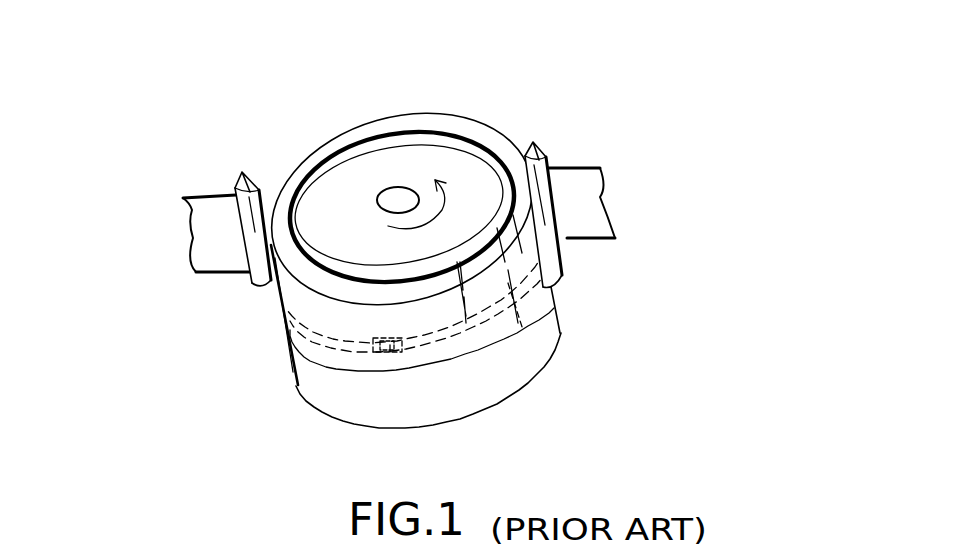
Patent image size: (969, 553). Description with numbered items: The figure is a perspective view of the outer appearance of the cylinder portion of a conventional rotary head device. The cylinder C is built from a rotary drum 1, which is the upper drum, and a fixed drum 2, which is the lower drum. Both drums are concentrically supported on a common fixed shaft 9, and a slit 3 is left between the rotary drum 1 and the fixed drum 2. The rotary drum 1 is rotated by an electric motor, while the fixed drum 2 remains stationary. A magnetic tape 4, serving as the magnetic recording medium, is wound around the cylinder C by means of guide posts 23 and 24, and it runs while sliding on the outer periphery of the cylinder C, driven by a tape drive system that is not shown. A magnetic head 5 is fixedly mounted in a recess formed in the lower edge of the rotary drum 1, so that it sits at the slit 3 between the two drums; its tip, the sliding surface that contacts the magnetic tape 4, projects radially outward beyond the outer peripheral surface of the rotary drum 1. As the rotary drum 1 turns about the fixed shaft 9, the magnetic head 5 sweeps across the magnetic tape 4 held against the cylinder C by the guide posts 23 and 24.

The rotary drum 1 is at (197, 88).
The fixed drum 2 is at (323, 393).
The slit 3 is at (533, 372).
The magnetic tape 4 is at (197, 228).
The magnetic head 5 is at (390, 352).
The fixed shaft 9 is at (397, 187).
The guide post 23 is at (255, 168).
The guide post 24 is at (540, 148).
The cylinder C is at (533, 42).